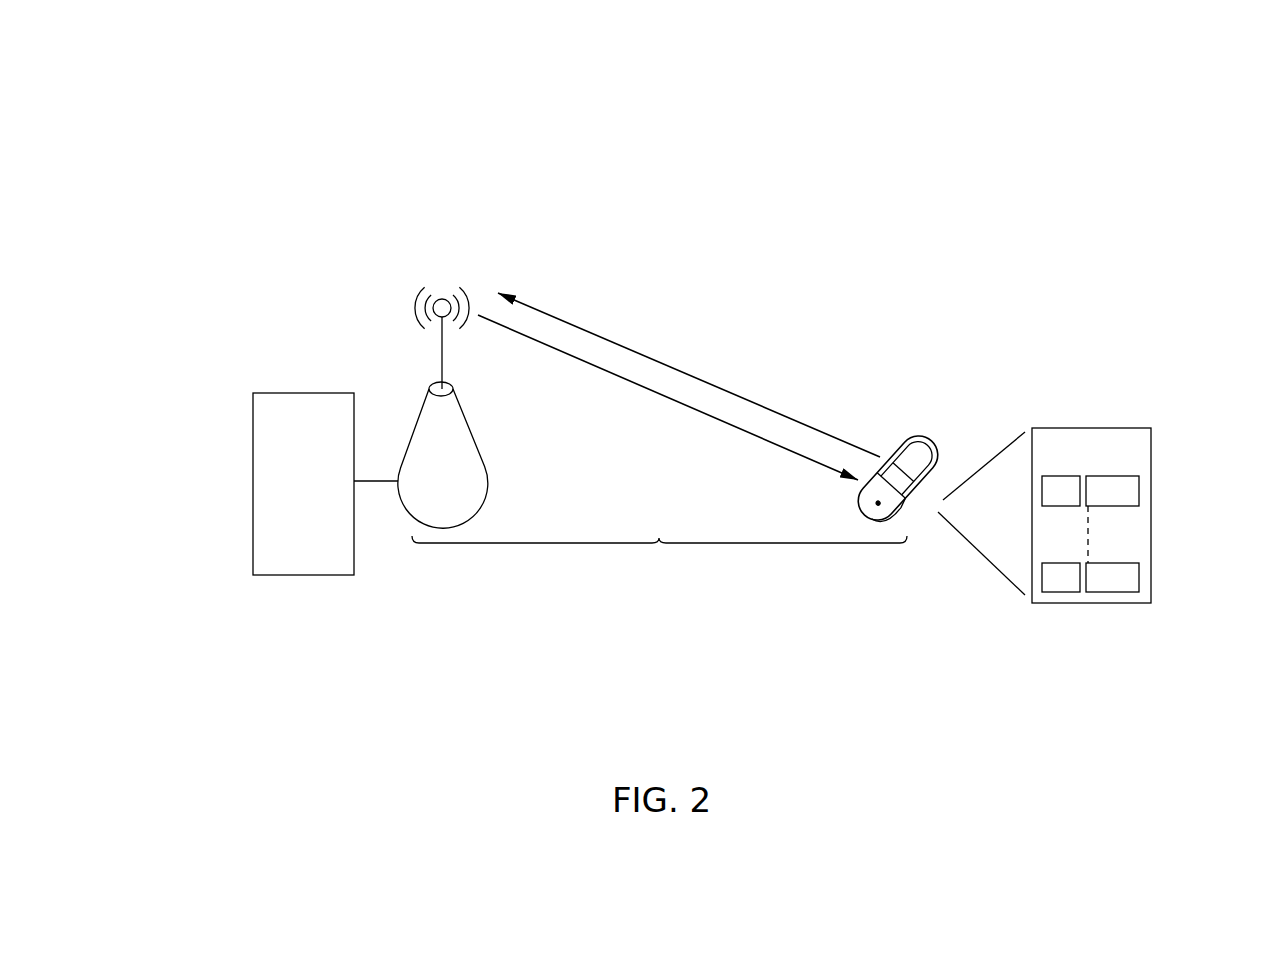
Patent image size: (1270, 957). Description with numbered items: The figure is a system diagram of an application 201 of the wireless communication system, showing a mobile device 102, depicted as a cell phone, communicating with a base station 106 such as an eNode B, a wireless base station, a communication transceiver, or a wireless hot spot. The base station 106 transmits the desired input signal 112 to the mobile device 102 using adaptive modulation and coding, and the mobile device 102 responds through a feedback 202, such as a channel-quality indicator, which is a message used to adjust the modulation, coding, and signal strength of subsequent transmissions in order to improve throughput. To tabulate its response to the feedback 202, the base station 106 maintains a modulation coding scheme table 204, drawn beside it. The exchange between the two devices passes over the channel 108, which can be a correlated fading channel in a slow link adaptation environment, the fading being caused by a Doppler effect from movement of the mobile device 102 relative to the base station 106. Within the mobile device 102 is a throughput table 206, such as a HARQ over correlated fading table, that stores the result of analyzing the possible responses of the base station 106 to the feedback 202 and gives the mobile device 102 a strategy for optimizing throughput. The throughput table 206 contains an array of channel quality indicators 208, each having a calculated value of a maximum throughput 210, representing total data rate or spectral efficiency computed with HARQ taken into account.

The application 201 is at (217, 92).
The modulation coding scheme (MCS) table 204 is at (313, 412).
The base station 106 is at (462, 452).
The feedback 202 is at (713, 387).
The desired input signal 112 is at (663, 395).
The channel 108 is at (659, 546).
The mobile device 102 is at (937, 510).
The throughput table 206 is at (1102, 467).
The channel quality indicators 208 is at (1055, 490).
The maximum throughput 210 is at (1124, 492).